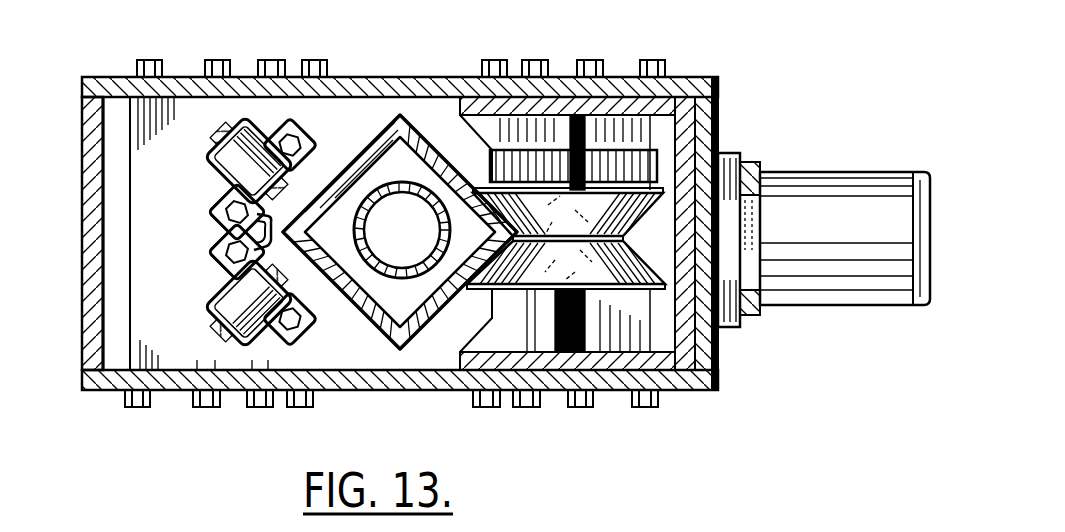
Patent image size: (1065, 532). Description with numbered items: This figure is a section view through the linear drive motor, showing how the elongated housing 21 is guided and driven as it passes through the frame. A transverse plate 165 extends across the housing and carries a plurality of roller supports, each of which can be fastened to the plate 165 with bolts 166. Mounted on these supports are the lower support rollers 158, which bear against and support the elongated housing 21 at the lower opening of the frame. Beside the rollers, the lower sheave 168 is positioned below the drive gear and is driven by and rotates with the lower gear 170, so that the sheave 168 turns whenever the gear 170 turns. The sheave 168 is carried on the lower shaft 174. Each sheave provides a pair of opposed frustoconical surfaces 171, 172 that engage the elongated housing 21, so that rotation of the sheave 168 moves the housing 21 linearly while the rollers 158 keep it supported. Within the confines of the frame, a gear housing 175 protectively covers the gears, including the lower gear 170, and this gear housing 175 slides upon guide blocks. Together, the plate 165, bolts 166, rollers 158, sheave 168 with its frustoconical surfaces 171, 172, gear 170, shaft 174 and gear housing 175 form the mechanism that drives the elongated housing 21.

The elongated housing 21 is at (378, 332).
The lower support rollers 158 is at (235, 186).
The transverse plate 165 is at (150, 253).
The bolts 166 is at (175, 18).
The lower sheave 168 is at (653, 162).
The lower gear 170 is at (718, 104).
The frustoconical surface 171 is at (650, 215).
The frustoconical surface 172 is at (743, 313).
The lower shaft 174 is at (713, 363).
The gear housing 175 is at (707, 393).